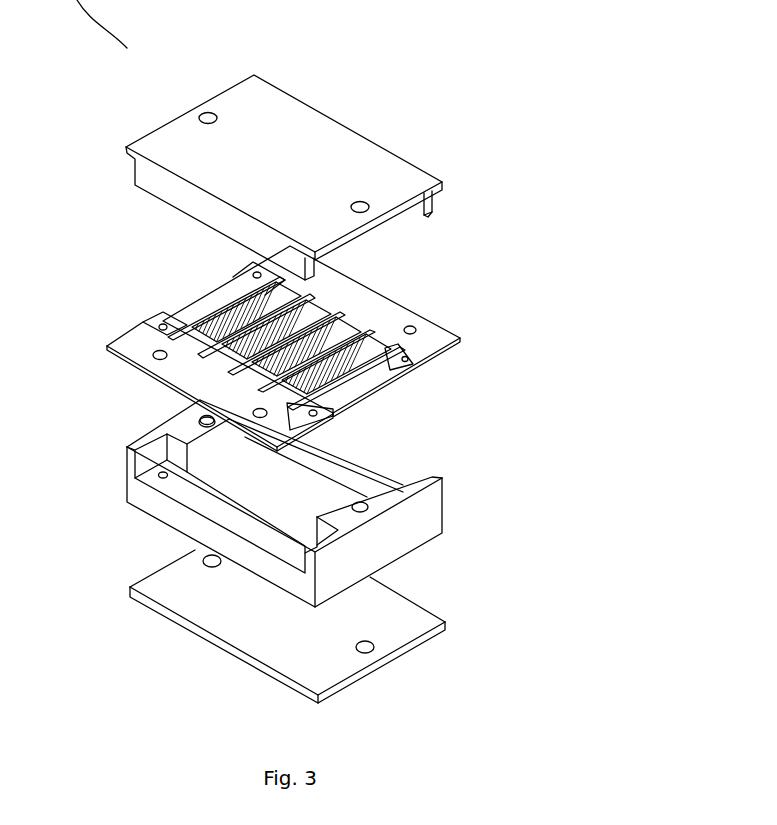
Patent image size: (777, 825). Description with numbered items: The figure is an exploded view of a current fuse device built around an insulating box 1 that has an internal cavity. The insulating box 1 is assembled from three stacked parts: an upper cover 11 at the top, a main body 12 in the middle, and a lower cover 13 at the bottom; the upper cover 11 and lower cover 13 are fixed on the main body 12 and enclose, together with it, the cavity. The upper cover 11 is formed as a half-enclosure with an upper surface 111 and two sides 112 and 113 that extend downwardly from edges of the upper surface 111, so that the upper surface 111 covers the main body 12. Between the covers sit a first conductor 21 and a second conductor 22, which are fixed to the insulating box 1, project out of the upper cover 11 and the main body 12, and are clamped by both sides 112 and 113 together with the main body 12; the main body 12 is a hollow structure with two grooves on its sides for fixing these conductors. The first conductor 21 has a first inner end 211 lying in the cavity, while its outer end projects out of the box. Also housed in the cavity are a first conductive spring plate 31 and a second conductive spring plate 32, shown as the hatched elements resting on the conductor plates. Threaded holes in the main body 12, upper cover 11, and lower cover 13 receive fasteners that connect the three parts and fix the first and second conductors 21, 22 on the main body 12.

The insulating box 1 is at (410, 49).
The upper cover 11 is at (275, 160).
The upper surface 111 is at (172, 135).
The side 112 is at (145, 175).
The side 113 is at (432, 203).
The main body 12 is at (400, 537).
The lower cover 13 is at (392, 618).
The first conductor 21 is at (330, 331).
The first inner end 211 is at (385, 340).
The second conductor 22 is at (140, 350).
The first conductive spring plate 31 is at (357, 380).
The second conductive spring plate 32 is at (220, 303).